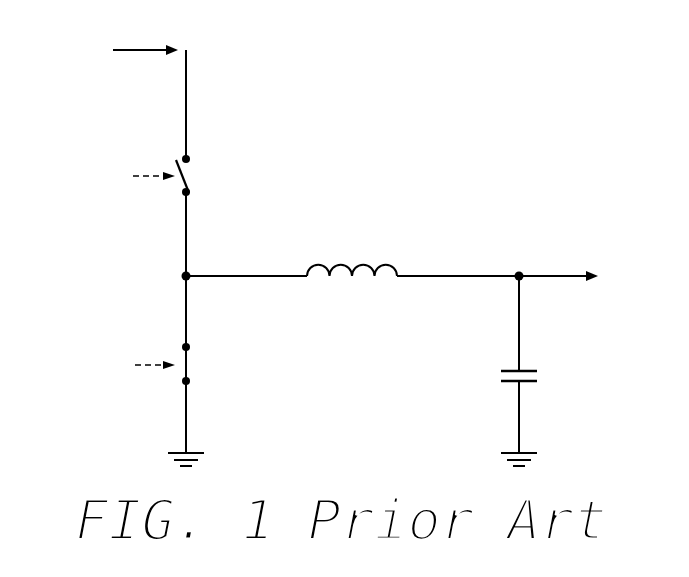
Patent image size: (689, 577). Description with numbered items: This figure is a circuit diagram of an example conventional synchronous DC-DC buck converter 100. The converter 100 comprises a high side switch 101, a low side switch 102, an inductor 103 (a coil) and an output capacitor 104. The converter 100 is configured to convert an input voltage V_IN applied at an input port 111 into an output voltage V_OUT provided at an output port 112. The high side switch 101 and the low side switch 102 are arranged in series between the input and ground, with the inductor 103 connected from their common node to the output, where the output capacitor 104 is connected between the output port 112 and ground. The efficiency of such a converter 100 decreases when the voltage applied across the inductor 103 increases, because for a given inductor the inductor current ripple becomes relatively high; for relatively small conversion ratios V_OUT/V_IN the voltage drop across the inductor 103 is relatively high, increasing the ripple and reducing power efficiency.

The converter 100 is at (468, 170).
The high side switch 101 is at (195, 185).
The low side switch 102 is at (193, 373).
The inductor 103 is at (358, 278).
The output capacitor 104 is at (501, 371).
The input port 111 is at (127, 54).
The output port 112 is at (566, 281).